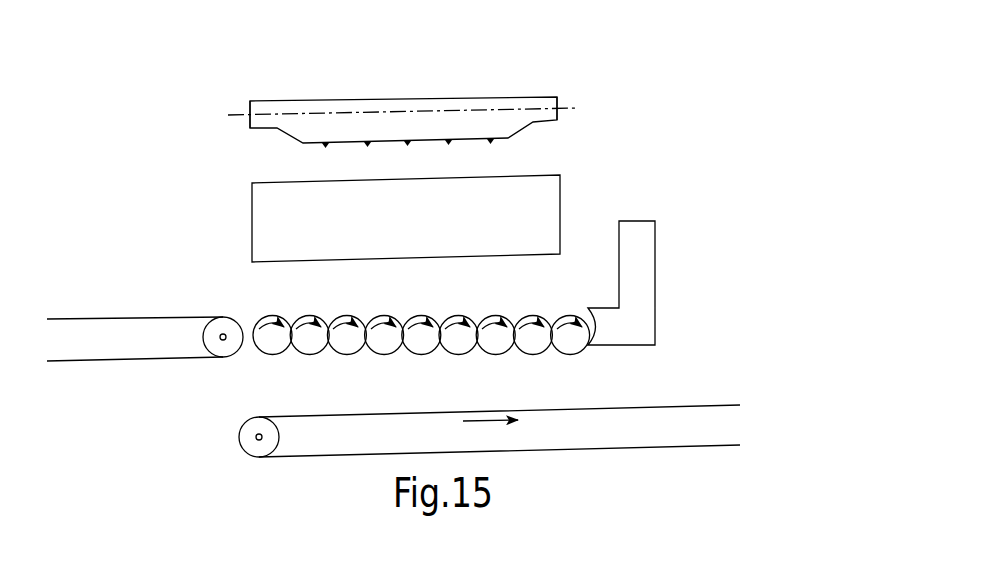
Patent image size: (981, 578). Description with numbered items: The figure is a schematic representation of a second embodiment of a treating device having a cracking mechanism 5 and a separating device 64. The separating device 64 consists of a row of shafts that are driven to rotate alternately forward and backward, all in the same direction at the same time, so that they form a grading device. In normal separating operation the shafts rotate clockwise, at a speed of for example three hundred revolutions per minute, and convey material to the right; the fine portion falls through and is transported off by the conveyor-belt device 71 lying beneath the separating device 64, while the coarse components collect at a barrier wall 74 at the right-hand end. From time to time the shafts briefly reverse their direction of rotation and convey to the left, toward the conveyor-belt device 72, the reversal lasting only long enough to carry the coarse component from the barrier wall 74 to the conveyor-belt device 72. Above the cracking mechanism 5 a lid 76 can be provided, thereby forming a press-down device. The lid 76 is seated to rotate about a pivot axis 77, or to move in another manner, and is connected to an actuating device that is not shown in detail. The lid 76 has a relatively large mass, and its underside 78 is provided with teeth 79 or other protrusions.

The cracking mechanism 5 is at (240, 221).
The separating device 64 is at (258, 365).
The conveyor-belt device 71 is at (582, 399).
The conveyor-belt device 72 is at (157, 312).
The barrier wall 74 is at (643, 263).
The lid 76 is at (443, 104).
The pivot axis 77 is at (248, 116).
The underside 78 is at (482, 140).
The teeth 79 is at (327, 143).